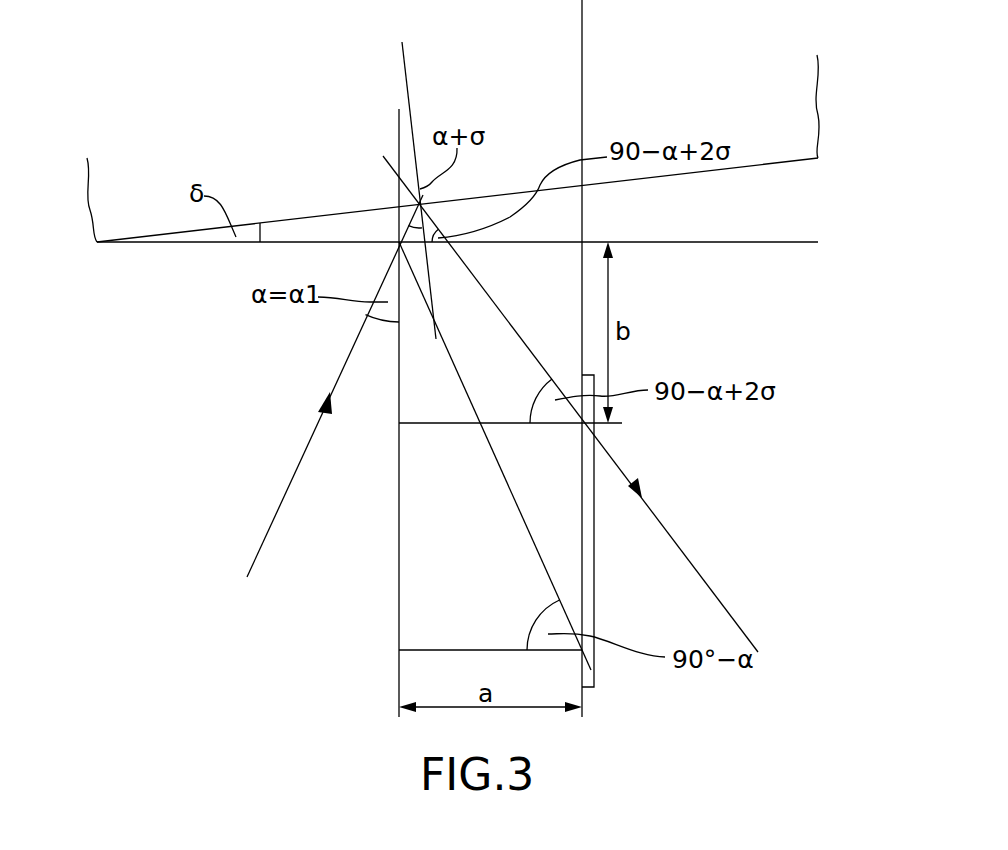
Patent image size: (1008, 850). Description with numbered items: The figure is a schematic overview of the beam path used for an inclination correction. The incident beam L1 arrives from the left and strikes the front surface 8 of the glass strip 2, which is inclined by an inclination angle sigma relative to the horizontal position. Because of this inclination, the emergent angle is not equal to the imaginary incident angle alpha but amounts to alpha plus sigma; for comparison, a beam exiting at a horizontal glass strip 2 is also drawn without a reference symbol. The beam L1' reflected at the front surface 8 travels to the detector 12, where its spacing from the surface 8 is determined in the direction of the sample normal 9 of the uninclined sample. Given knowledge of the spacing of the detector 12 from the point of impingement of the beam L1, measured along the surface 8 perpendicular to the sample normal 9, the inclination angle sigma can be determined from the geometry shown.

The glass strip 2 is at (268, 206).
The front surface 8 is at (739, 168).
The sample normal 9 is at (398, 557).
The detector 12 is at (587, 552).
The incident beam L1 is at (305, 386).
The reflected beam L1' is at (587, 404).